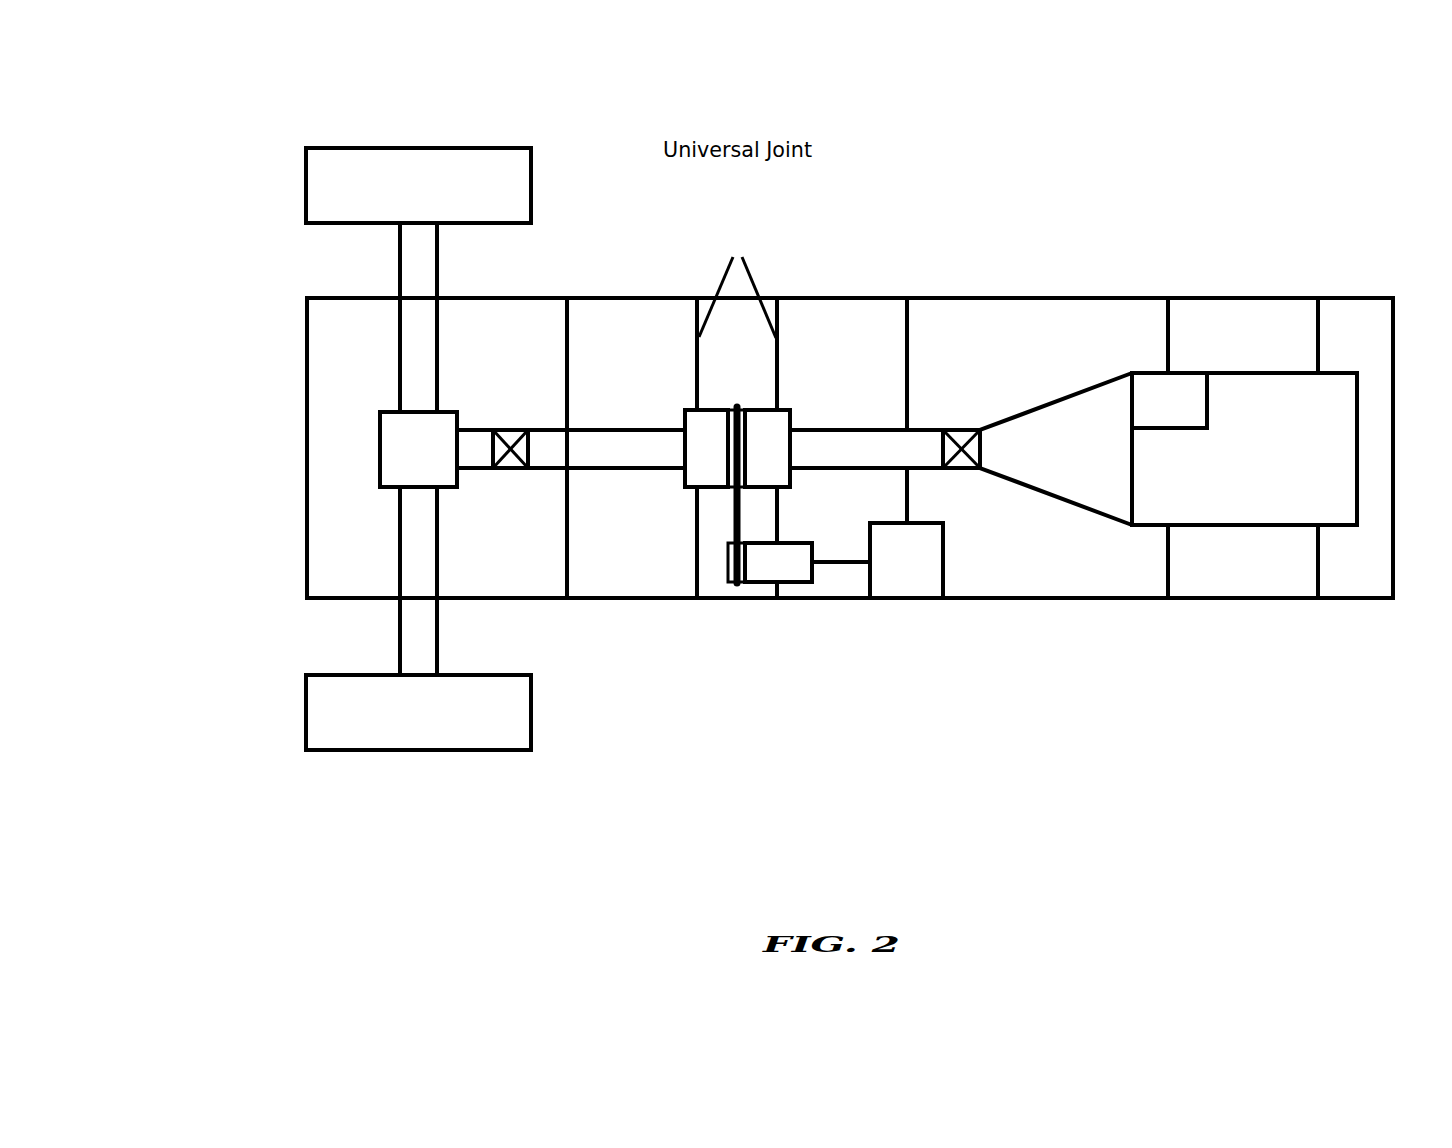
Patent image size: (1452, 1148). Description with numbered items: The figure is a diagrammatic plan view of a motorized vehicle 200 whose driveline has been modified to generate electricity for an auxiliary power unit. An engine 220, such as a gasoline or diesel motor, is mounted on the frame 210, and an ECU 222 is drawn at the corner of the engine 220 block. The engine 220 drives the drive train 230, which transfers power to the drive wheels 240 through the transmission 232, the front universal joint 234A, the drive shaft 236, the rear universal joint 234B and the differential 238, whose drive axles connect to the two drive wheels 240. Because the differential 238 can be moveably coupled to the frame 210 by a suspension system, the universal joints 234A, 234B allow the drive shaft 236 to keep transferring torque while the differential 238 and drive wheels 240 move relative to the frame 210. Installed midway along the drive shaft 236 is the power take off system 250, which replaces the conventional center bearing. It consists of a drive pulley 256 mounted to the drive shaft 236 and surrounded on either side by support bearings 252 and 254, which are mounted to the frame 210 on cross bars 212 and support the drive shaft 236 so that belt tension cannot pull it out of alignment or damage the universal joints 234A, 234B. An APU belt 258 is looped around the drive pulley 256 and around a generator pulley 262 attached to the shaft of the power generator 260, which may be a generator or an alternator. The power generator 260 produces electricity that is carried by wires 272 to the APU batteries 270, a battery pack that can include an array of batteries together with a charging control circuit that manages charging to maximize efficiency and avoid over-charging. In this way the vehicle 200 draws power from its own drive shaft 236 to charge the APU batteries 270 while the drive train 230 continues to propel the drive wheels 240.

The motorized vehicle 200 is at (1212, 127).
The frame 210 is at (900, 296).
The cross bars 212 is at (908, 335).
The engine 220 is at (1244, 449).
The ECU 222 is at (1185, 385).
The drive train 230 is at (878, 285).
The transmission 232 is at (1056, 449).
The front universal joint 234A is at (783, 175).
The rear universal joint 234B is at (682, 175).
The drive shaft 236 is at (700, 449).
The differential 238 is at (400, 450).
The drive wheels 240 is at (418, 449).
The power take off system 250 is at (752, 652).
The support bearing 252 is at (710, 457).
The support bearing 254 is at (780, 437).
The drive pulley 256 is at (730, 488).
The APU belt 258 is at (734, 510).
The power generator 260 is at (792, 560).
The generator pulley 262 is at (748, 582).
The APU batteries 270 is at (905, 582).
The wires 272 is at (836, 562).